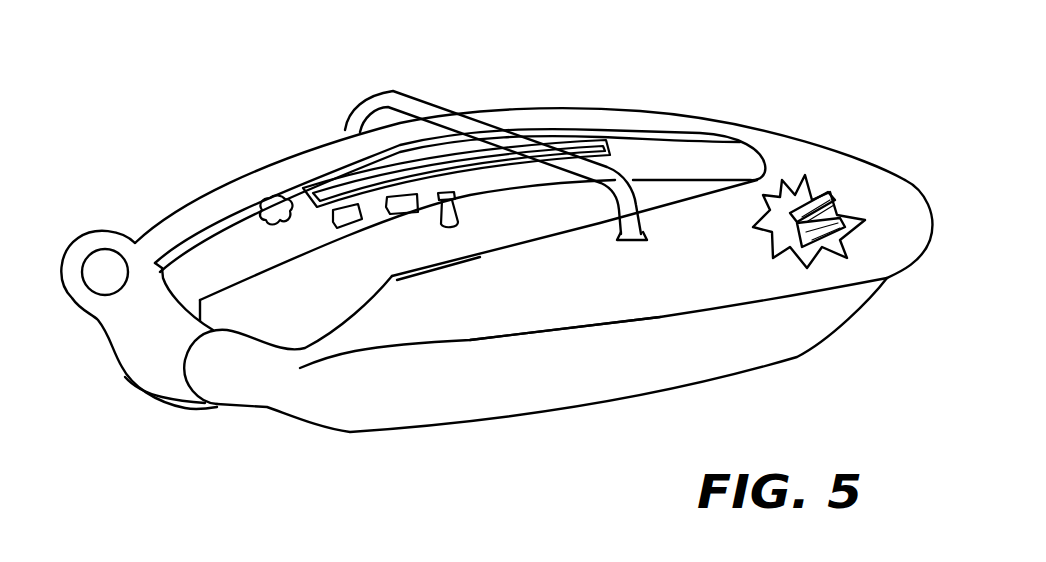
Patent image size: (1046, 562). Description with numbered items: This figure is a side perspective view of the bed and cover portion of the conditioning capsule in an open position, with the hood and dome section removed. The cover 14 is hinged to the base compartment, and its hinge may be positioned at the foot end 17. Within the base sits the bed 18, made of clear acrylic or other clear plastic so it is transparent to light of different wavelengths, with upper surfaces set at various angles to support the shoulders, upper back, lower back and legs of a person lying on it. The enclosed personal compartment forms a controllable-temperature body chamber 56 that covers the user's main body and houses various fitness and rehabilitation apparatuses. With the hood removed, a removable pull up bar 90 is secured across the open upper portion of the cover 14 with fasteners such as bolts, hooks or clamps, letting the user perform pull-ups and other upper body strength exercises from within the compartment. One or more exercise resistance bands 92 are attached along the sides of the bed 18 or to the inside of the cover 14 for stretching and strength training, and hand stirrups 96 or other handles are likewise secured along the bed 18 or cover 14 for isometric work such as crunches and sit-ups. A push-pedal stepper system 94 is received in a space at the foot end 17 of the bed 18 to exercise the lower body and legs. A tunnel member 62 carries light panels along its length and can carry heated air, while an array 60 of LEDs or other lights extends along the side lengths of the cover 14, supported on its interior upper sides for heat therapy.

The cover 14 is at (847, 173).
The foot end 17 is at (895, 208).
The bed 18 is at (243, 257).
The body chamber 56 is at (547, 207).
The array of LEDs or other lights 60 is at (357, 183).
The tunnel member 62 is at (627, 147).
The removable pull up bar 90 is at (432, 110).
The exercise resistance bands 92 is at (368, 206).
The push-pedal stepper system 94 is at (788, 195).
The hand stirrups 96 is at (460, 202).